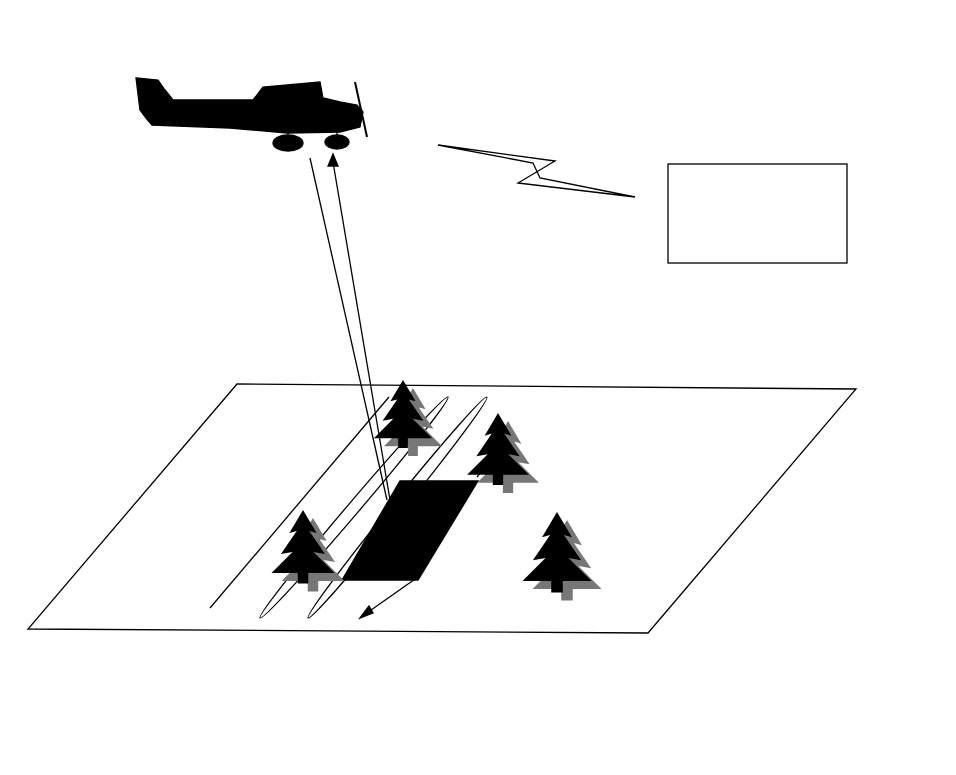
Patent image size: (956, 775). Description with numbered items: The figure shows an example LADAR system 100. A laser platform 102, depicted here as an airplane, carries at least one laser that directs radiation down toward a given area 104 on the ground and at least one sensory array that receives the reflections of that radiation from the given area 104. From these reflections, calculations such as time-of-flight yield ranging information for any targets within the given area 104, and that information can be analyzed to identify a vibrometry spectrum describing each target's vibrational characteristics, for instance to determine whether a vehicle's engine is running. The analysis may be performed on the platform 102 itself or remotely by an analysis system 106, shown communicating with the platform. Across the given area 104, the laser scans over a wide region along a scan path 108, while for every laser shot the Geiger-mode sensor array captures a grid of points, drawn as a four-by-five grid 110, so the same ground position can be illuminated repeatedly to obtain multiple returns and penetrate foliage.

The LADAR system 100 is at (653, 66).
The laser platform 102 is at (265, 78).
The given area 104 is at (428, 573).
The analysis system 106 is at (806, 265).
The scan path 108 is at (337, 460).
The 4×5 grid 110 is at (448, 542).